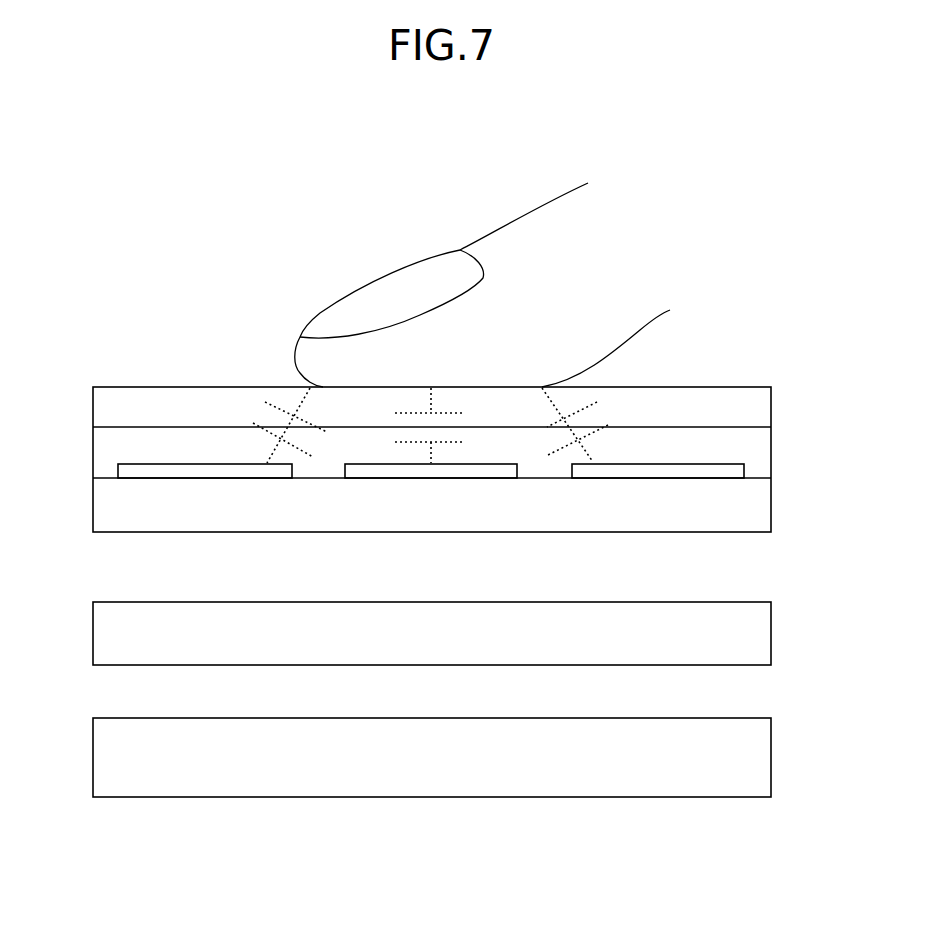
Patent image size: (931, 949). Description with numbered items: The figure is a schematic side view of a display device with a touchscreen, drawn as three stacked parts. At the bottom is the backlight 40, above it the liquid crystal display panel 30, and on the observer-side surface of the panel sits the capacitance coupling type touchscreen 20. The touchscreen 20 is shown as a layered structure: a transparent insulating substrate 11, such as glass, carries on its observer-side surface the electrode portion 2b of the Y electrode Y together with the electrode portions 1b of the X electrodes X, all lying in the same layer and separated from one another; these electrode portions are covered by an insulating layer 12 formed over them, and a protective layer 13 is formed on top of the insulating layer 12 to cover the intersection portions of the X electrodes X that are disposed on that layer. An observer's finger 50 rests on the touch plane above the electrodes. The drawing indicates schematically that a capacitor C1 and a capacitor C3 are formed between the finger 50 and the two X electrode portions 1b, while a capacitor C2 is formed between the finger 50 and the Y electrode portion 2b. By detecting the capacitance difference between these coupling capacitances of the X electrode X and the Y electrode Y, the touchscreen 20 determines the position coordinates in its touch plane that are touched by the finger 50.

The substrate 11 is at (104, 510).
The insulating layer 12 is at (104, 452).
The protective layer 13 is at (104, 408).
The touchscreen 20 is at (435, 484).
The liquid crystal display panel 30 is at (762, 632).
The backlight 40 is at (762, 752).
The finger 50 is at (331, 318).
The capacitor C1 is at (279, 425).
The capacitor C2 is at (450, 425).
The capacitor C3 is at (587, 425).
The X electrode X is at (431, 523).
The electrode portion 1b is at (210, 473).
The Y electrode Y is at (431, 523).
The electrode portion 2b is at (477, 473).